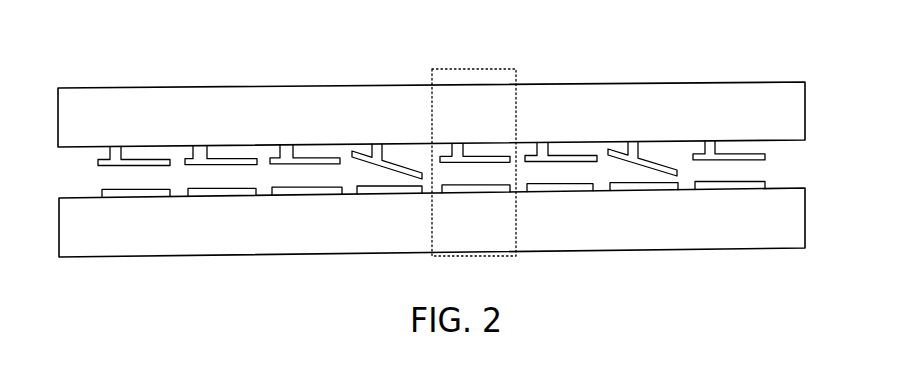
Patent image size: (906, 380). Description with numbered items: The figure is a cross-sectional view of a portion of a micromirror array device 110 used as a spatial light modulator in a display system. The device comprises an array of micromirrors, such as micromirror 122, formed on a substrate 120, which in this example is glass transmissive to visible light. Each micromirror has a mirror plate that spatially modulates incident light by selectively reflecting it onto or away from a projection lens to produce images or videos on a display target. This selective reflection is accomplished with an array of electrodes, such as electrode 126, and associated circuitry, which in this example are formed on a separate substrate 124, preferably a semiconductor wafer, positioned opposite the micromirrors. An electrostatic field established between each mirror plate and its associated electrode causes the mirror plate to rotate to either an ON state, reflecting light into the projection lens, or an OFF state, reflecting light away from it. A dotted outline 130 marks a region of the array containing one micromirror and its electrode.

The micromirror array device 110 is at (336, 64).
The substrate 120 is at (177, 88).
The micromirror 122 is at (495, 152).
The substrate 124 is at (178, 257).
The electrode 126 is at (283, 198).
The unit cell region 130 is at (460, 64).